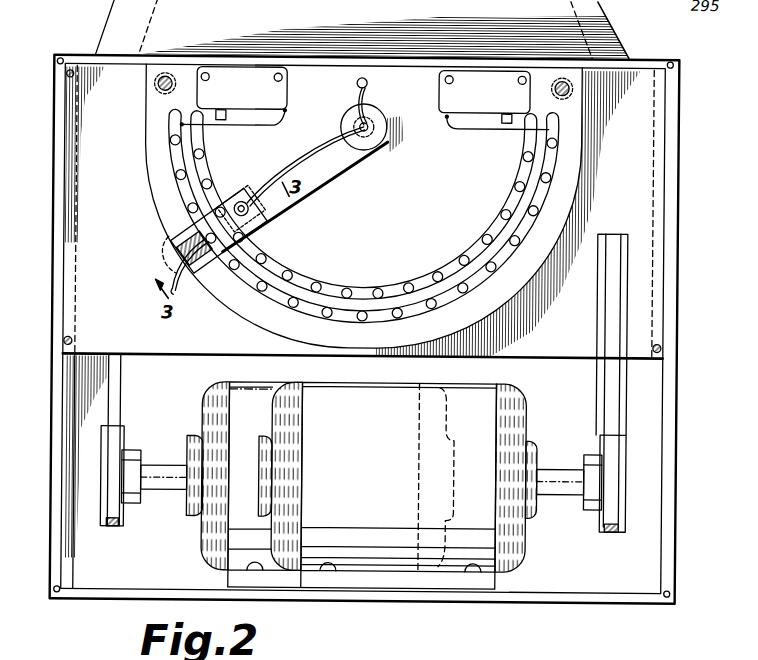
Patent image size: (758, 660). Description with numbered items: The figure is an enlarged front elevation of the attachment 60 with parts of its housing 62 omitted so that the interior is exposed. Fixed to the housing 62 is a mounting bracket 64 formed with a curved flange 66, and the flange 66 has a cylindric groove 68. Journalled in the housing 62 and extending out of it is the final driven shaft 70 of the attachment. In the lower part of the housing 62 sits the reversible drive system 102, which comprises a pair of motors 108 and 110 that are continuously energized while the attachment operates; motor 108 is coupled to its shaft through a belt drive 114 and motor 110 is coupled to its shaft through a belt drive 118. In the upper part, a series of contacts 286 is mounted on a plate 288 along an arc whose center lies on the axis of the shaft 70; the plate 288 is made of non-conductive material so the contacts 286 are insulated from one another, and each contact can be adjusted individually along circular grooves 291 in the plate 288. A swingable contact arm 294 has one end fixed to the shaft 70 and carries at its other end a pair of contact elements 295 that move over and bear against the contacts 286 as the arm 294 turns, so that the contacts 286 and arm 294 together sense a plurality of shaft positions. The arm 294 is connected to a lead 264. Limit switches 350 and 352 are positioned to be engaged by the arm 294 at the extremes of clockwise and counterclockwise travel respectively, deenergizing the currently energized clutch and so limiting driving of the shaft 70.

The attachment 60 is at (67, 50).
The housing 62 is at (52, 200).
The mounting bracket 64 is at (368, 36).
The curved flange 66 is at (104, 13).
The cylindric groove 68 is at (150, 30).
The final driven shaft 70 is at (388, 133).
The reversible drive system 102 is at (135, 560).
The motor 108 is at (233, 385).
The motor 110 is at (519, 411).
The belt drive 114 is at (122, 383).
The belt drive 118 is at (612, 395).
The lead 264 is at (367, 88).
The contacts 286 is at (484, 234).
The plate 288 is at (569, 149).
The circular grooves 291 is at (413, 306).
The swingable contact arm 294 is at (318, 185).
The contact elements 295 is at (262, 226).
The limit switch 350 is at (263, 95).
The limit switch 352 is at (506, 95).